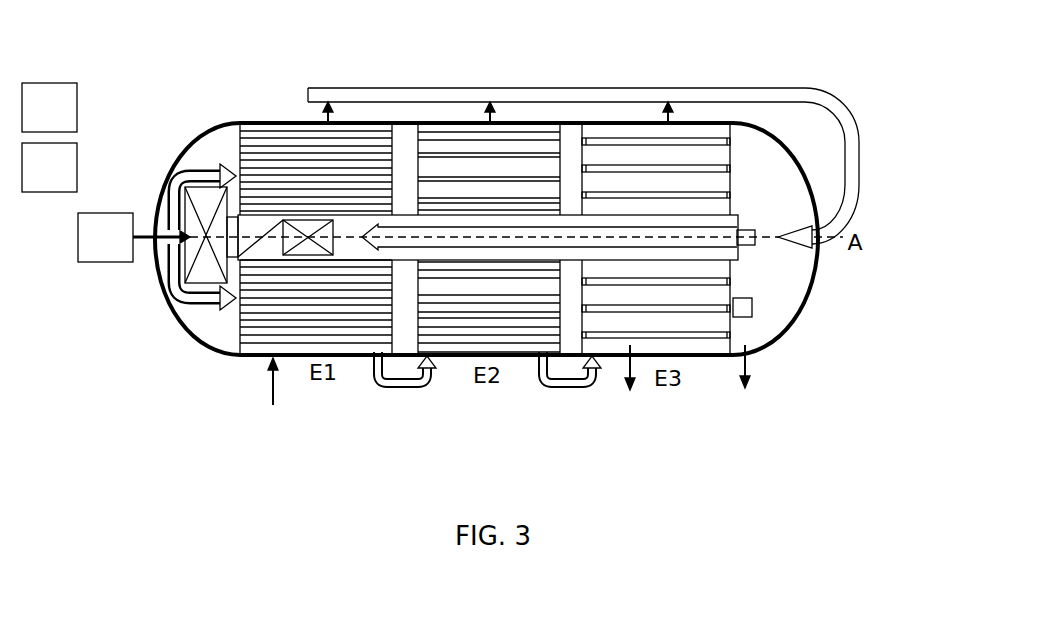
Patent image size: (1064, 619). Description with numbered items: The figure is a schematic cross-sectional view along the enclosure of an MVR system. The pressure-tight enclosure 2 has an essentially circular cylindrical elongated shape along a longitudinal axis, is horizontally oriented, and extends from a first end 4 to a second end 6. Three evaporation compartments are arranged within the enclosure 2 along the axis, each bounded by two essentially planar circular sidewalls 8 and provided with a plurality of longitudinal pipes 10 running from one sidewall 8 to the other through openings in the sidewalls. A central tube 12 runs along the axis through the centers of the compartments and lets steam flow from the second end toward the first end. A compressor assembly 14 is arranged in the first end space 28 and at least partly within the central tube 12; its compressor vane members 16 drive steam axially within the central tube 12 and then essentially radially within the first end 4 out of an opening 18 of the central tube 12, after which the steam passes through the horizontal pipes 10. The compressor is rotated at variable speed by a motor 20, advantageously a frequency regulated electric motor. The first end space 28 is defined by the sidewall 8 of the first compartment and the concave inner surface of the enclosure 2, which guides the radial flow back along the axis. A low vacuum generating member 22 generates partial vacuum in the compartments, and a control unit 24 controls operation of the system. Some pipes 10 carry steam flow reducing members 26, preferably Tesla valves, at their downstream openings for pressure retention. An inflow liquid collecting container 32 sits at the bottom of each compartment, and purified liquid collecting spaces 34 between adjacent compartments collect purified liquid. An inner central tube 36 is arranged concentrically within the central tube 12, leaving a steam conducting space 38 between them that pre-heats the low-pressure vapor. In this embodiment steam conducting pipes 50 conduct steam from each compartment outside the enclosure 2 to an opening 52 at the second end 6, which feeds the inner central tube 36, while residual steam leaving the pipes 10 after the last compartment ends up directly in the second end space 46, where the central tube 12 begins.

The pressure-tight enclosure 2 is at (486, 185).
The first end 4 is at (154, 118).
The second end 6 is at (815, 118).
The sidewalls 8 is at (393, 162).
The longitudinal pipes 10 is at (297, 150).
The central tube 12 is at (735, 322).
The compressor assembly 14 is at (131, 286).
The compressor vane members 16 is at (207, 265).
The opening 18 is at (238, 228).
The motor 20 is at (134, 237).
The low vacuum generating member 22 is at (49, 107).
The control unit 24 is at (49, 167).
The steam flow reducing members 26 is at (743, 308).
The first end space 28 is at (200, 152).
The inflow liquid collecting container 32 is at (620, 355).
The purified liquid collecting spaces 34 is at (402, 335).
The inner central tube 36 is at (740, 262).
The steam conducting space 38 is at (280, 245).
The second end space 46 is at (752, 150).
The steam conducting pipes 50 is at (708, 90).
The opening 52 is at (790, 235).